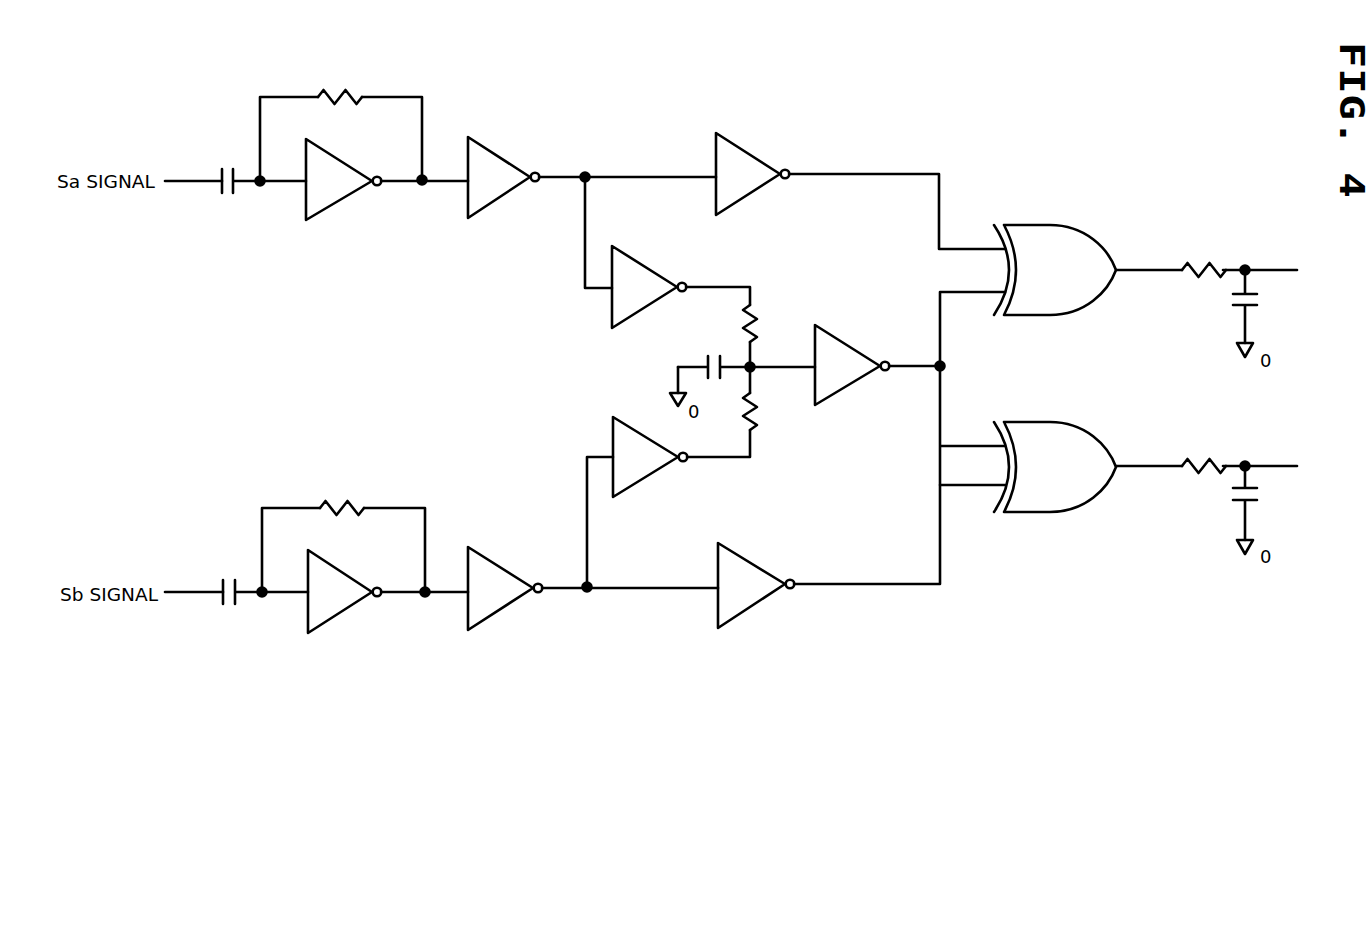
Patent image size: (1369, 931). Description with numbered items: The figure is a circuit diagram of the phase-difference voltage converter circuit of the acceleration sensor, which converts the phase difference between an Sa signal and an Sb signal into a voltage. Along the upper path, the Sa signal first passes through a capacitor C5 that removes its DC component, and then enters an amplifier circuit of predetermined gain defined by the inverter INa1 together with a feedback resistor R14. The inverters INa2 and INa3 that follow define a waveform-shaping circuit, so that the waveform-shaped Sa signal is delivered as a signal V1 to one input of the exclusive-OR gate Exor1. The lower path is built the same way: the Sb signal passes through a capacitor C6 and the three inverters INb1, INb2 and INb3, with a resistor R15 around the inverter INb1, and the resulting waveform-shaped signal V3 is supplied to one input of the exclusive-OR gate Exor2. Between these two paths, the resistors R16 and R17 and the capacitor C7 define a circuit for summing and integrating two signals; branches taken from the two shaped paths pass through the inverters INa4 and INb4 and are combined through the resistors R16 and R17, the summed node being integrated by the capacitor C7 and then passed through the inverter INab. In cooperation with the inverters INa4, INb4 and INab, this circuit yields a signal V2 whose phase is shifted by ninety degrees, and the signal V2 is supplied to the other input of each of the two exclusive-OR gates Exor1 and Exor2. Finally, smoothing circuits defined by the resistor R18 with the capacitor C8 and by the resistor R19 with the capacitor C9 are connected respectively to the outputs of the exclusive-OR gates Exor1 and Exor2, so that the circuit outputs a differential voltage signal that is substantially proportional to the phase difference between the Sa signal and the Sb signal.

The capacitor C5 is at (260, 197).
The resistor R14 is at (341, 124).
The inverter INa1 is at (340, 205).
The inverter INa2 is at (504, 157).
The inverter INa3 is at (742, 143).
The inverter INa4 is at (641, 257).
The resistor R16 is at (772, 330).
The capacitor C7 is at (742, 370).
The resistor R17 is at (744, 412).
The inverter INab is at (846, 392).
The inverter INb4 is at (640, 489).
The signal V1 is at (897, 198).
The signal V2 is at (947, 388).
The signal V3 is at (867, 534).
The exclusive-OR gate Exor1 is at (1080, 231).
The exclusive-OR gate Exor2 is at (1082, 426).
The resistor R18 is at (1239, 256).
The capacitor C8 is at (1262, 313).
The resistor R19 is at (1239, 451).
The capacitor C9 is at (1262, 510).
The capacitor C6 is at (262, 608).
The resistor R15 is at (343, 533).
The inverter INb1 is at (332, 620).
The inverter INb2 is at (498, 613).
The inverter INb3 is at (745, 612).